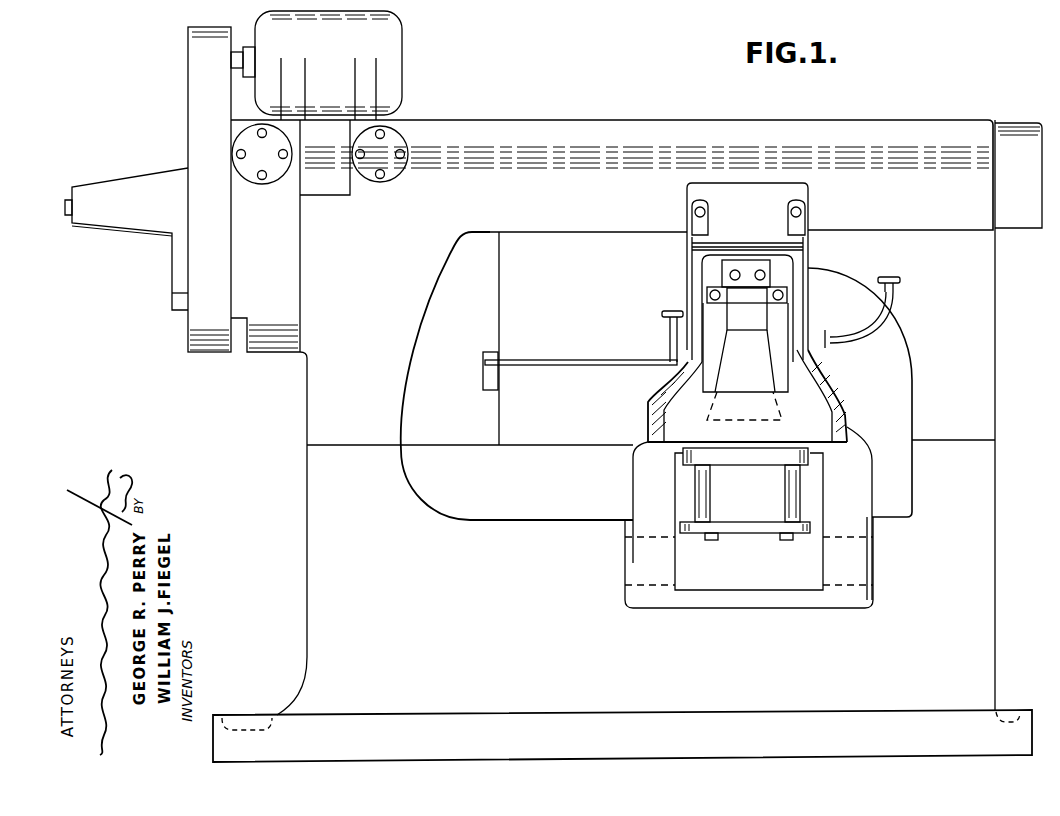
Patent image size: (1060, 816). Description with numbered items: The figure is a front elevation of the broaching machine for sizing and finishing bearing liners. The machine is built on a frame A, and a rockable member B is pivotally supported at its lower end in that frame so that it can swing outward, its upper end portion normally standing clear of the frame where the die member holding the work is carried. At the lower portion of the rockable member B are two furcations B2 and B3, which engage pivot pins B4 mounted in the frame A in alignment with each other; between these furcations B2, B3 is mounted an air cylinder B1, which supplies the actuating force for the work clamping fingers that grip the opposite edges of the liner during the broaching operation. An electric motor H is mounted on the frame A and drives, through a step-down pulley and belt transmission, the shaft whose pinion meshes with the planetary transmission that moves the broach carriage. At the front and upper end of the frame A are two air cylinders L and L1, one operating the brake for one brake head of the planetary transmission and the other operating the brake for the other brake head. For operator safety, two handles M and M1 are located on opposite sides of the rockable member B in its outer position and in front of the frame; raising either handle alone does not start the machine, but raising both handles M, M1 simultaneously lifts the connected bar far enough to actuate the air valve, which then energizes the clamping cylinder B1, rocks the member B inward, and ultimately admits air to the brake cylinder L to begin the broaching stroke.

The frame A is at (303, 552).
The electric motor H is at (397, 68).
The air cylinder L is at (267, 181).
The air cylinder L1 is at (371, 181).
The handle M is at (668, 312).
The handle M1 is at (895, 298).
The rockable member B is at (808, 425).
The air cylinder B1 is at (752, 507).
The furcation B2 is at (648, 492).
The furcation B3 is at (850, 505).
The pivot pin B4 is at (880, 548).